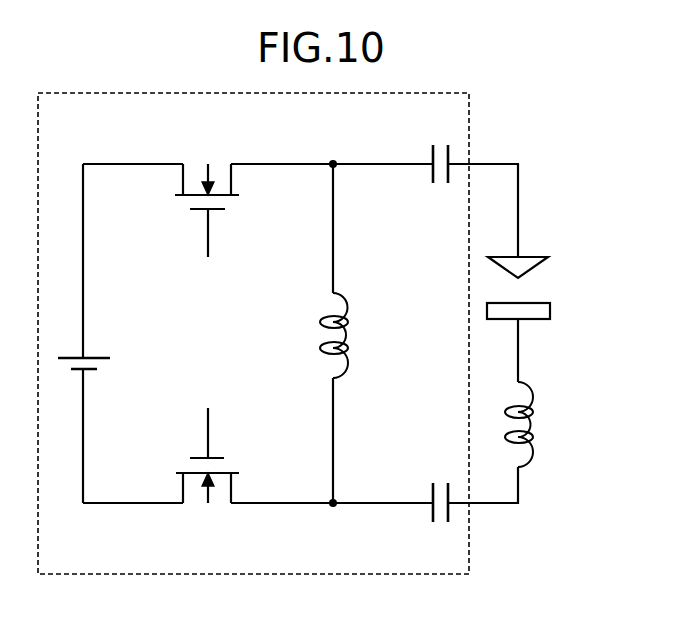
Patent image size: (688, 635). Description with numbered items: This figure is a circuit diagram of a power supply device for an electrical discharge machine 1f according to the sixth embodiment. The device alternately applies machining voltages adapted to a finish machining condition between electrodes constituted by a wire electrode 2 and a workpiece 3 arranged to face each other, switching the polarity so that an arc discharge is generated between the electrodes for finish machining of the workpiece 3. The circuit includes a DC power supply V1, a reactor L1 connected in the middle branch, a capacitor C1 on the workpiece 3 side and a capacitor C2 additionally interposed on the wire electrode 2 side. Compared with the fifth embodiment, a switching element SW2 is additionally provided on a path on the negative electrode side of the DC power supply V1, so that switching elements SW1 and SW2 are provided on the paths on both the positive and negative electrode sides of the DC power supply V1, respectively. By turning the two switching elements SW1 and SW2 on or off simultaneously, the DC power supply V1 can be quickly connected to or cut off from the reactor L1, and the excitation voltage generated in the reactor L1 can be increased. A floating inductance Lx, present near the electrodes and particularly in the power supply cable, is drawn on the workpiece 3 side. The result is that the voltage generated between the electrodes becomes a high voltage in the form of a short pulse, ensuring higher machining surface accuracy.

The power supply device for an electrical discharge machine 1f is at (207, 575).
The switching element SW1 is at (215, 162).
The switching element SW2 is at (205, 505).
The DC power supply V1 is at (98, 356).
The reactor L1 is at (318, 320).
The capacitor C1 is at (431, 515).
The capacitor C2 is at (431, 174).
The wire electrode 2 is at (534, 257).
The workpiece 3 is at (551, 309).
The floating inductance Lx is at (540, 425).